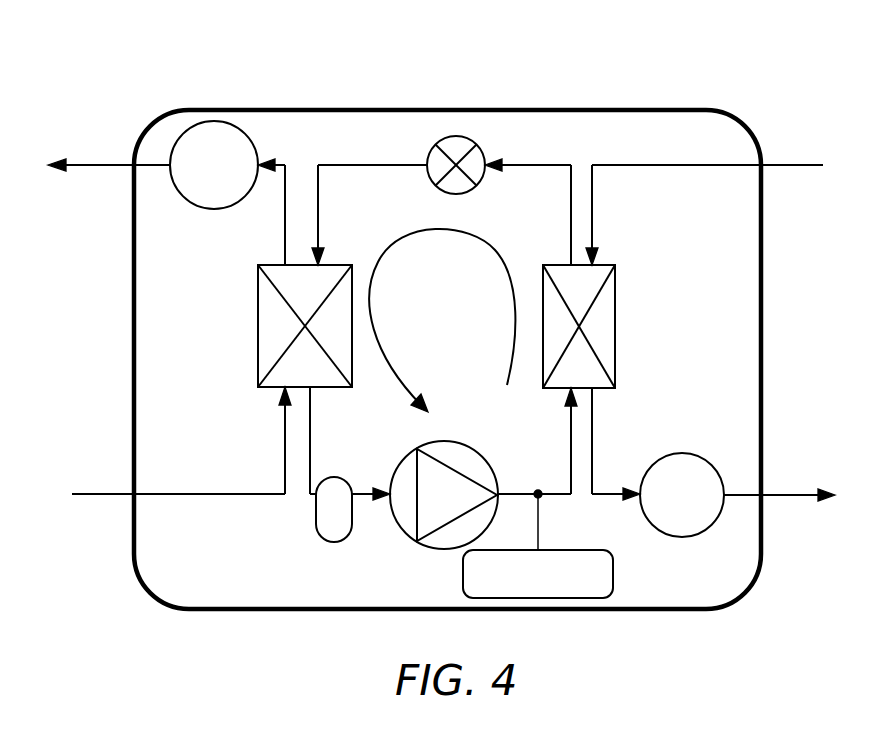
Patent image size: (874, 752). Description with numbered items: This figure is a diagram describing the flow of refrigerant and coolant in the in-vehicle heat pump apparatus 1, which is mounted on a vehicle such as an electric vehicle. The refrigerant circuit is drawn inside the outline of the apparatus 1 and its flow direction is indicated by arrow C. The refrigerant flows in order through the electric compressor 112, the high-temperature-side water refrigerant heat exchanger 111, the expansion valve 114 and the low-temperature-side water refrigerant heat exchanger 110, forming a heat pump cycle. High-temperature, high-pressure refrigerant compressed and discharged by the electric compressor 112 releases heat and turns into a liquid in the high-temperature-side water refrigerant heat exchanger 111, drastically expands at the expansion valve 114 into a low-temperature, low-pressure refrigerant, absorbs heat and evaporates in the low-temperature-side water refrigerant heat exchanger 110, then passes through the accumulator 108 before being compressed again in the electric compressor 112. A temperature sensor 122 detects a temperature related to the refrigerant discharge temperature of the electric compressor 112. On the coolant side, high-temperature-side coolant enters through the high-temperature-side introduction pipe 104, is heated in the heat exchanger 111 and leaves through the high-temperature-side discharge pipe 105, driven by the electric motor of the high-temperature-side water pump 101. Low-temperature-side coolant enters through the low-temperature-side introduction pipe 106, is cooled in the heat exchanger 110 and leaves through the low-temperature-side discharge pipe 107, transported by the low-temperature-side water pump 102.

The in-vehicle heat pump apparatus 1 is at (323, 108).
The high-temperature-side water pump 101 is at (683, 453).
The low-temperature-side water pump 102 is at (213, 121).
The high-temperature-side introduction pipe 104 is at (790, 165).
The high-temperature-side discharge pipe 105 is at (785, 495).
The low-temperature-side introduction pipe 106 is at (95, 494).
The low-temperature-side discharge pipe 107 is at (103, 165).
The accumulator 108 is at (316, 521).
The low-temperature-side water refrigerant heat exchanger 110 is at (258, 326).
The high-temperature-side water refrigerant heat exchanger 111 is at (616, 326).
The electric compressor 112 is at (401, 534).
The expansion valve 114 is at (456, 136).
The temperature sensor 122 is at (613, 566).
The arrow C is at (442, 322).